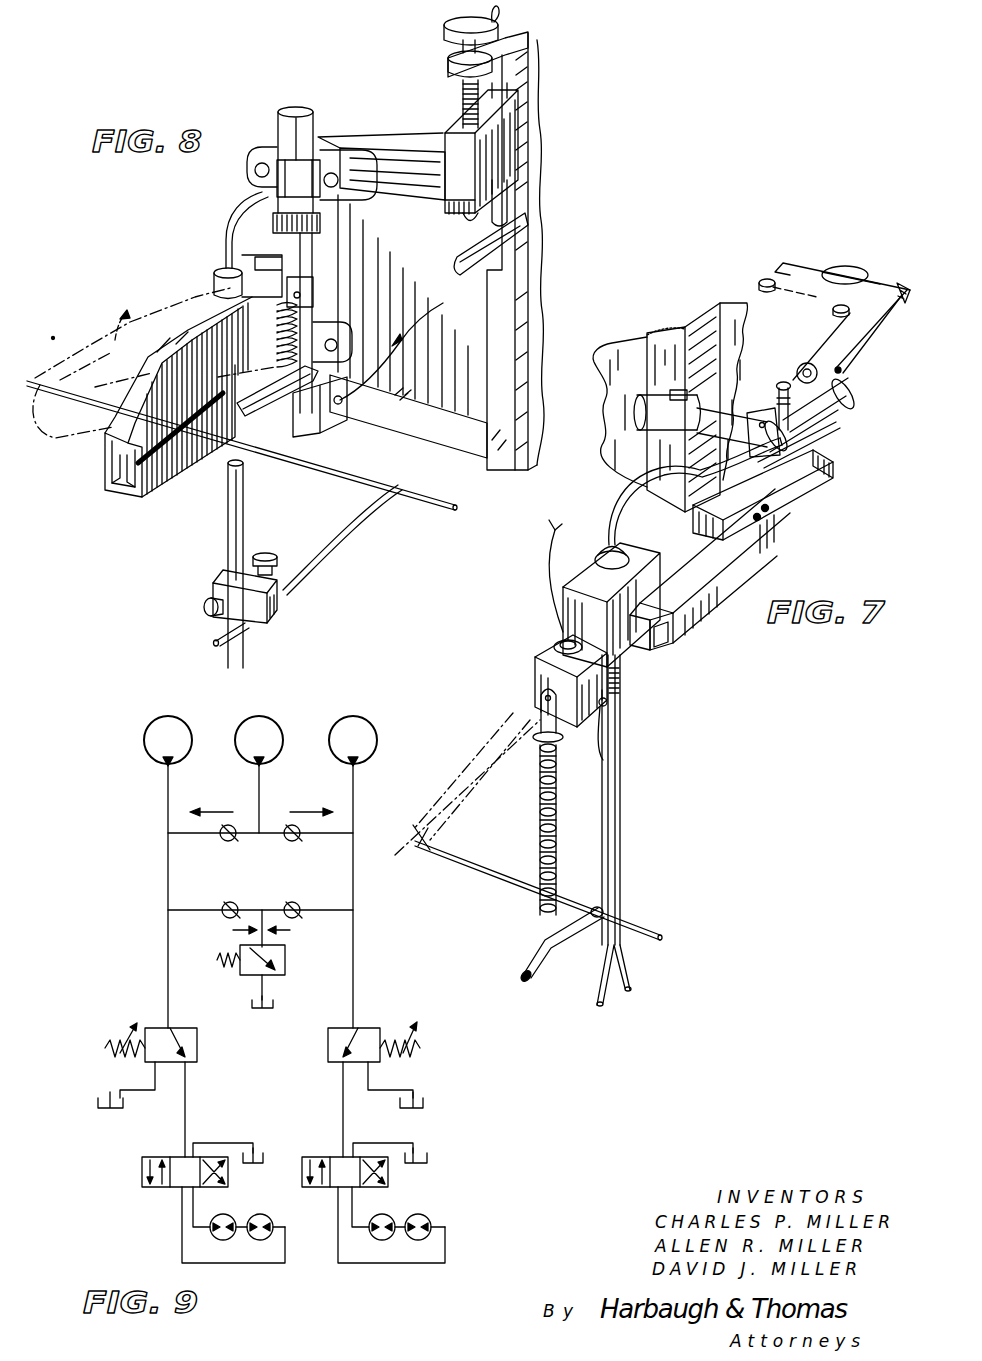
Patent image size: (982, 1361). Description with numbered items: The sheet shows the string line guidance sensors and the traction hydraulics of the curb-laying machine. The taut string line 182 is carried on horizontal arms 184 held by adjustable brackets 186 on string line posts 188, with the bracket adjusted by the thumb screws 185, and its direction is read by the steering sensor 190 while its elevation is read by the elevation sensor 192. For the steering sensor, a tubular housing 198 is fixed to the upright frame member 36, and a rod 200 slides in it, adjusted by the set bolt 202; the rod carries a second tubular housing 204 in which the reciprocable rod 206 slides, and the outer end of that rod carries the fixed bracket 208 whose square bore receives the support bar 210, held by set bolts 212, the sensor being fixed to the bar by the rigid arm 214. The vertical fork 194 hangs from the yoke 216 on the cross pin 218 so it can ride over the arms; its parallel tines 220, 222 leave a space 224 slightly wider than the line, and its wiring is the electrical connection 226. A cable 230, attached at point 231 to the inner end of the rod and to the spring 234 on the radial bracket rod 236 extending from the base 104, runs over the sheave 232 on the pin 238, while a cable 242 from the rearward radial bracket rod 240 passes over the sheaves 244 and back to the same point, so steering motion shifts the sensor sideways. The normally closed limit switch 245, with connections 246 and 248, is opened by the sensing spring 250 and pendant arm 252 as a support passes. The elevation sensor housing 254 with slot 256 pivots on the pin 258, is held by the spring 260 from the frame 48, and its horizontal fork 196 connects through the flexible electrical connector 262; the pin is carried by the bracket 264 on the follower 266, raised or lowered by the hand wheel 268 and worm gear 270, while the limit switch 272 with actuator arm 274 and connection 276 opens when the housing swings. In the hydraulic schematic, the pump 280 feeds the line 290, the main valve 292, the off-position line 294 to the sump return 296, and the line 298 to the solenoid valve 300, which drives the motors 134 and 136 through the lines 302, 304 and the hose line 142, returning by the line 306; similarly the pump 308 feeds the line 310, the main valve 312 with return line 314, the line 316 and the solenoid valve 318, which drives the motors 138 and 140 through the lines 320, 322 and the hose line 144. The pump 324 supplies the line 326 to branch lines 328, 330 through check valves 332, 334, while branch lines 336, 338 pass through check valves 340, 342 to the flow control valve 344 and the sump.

In FIG. 8, the hand wheel 268 is at (444, 31).
In FIG. 8, the worm gear 270 is at (462, 100).
In FIG. 8, the follower 266 is at (508, 143).
In FIG. 8, the bracket 264 is at (408, 147).
In FIG. 8, the pin 258 is at (300, 108).
In FIG. 8, the electrical connector 262 is at (226, 243).
In FIG. 8, the spring 260 is at (312, 280).
In FIG. 8, the electrical connection 276 is at (411, 348).
In FIG. 8, the frame 48 is at (383, 425).
In FIG. 8, the limit switch 272 is at (302, 427).
In FIG. 8, the actuator arm 274 is at (263, 420).
In FIG. 8, the elevation sensor 192 is at (170, 473).
In FIG. 8, the horizontal fork 196 is at (122, 498).
In FIG. 8, the housing 254 is at (107, 435).
In FIG. 8, the slot 256 is at (113, 463).
In FIG. 8, the string line 182 is at (447, 487).
In FIG. 7, the string line 182 is at (657, 933).
In FIG. 8, the horizontal arm 184 is at (350, 525).
In FIG. 7, the horizontal arm 184 is at (530, 963).
In FIG. 8, the adjustable bracket 186 is at (283, 597).
In FIG. 8, the thumb screw 185 is at (263, 547).
In FIG. 8, the string line post 188 is at (245, 650).
In FIG. 7, the set bolt 202 is at (653, 343).
In FIG. 7, the upright frame member 36 is at (657, 343).
In FIG. 7, the tubular housing 198 is at (653, 407).
In FIG. 7, the rod 200 is at (767, 410).
In FIG. 7, the pin 238 is at (787, 377).
In FIG. 7, the cable 230 is at (853, 360).
In FIG. 7, the sheave 232 is at (847, 372).
In FIG. 7, the attachment point 231 is at (841, 378).
In FIG. 7, the rearward radial bracket rod 240 is at (800, 262).
In FIG. 7, the base 104 is at (843, 266).
In FIG. 7, the spring 234 is at (890, 280).
In FIG. 7, the sheaves 244 is at (757, 282).
In FIG. 7, the cable 242 is at (810, 303).
In FIG. 7, the radial bracket rod 236 is at (860, 300).
In FIG. 7, the tubular housing 204 is at (827, 447).
In FIG. 7, the rod 206 is at (793, 477).
In FIG. 7, the support bar 210 is at (793, 503).
In FIG. 7, the set bolts 212 is at (760, 522).
In FIG. 7, the fixed bracket 208 is at (763, 547).
In FIG. 7, the steering sensor 190 is at (662, 577).
In FIG. 7, the electrical connection 246 is at (597, 547).
In FIG. 7, the electrical connection 226 is at (640, 472).
In FIG. 7, the electrical connection 248 is at (553, 532).
In FIG. 7, the limit switch 245 is at (543, 653).
In FIG. 7, the pendant arm 252 is at (540, 710).
In FIG. 7, the sensing spring 250 is at (547, 820).
In FIG. 7, the rigid arm 214 is at (642, 633).
In FIG. 7, the yoke 216 is at (613, 700).
In FIG. 7, the cross pin 218 is at (607, 707).
In FIG. 7, the tine 220 is at (622, 815).
In FIG. 7, the tine 222 is at (607, 833).
In FIG. 7, the vertical fork 194 is at (613, 873).
In FIG. 7, the space 224 is at (613, 957).
In FIG. 9, the pump 280 is at (172, 715).
In FIG. 9, the pump 324 is at (262, 715).
In FIG. 9, the pump 308 is at (358, 715).
In FIG. 9, the line 326 is at (263, 778).
In FIG. 9, the line 290 is at (167, 860).
In FIG. 9, the branch line 328 is at (200, 840).
In FIG. 9, the branch line 330 is at (330, 838).
In FIG. 9, the check valve 332 is at (237, 838).
In FIG. 9, the check valve 334 is at (293, 842).
In FIG. 9, the line 310 is at (357, 870).
In FIG. 9, the check valve 340 is at (224, 904).
In FIG. 9, the branch line 336 is at (224, 916).
In FIG. 9, the check valve 342 is at (300, 903).
In FIG. 9, the branch line 338 is at (300, 916).
In FIG. 9, the flow control valve 344 is at (285, 965).
In FIG. 9, the sump return 296 is at (273, 1003).
In FIG. 9, the main flow electrically-controlled valve 292 is at (183, 1027).
In FIG. 9, the line 294 is at (137, 1090).
In FIG. 9, the line 298 is at (188, 1082).
In FIG. 9, the four-position solenoid-operated valve 300 is at (183, 1157).
In FIG. 9, the line 306 is at (243, 1122).
In FIG. 9, the line 304 is at (195, 1203).
In FIG. 9, the hydraulic drive motor 134 is at (227, 1237).
In FIG. 9, the hydraulic hose line 142 is at (240, 1235).
In FIG. 9, the hydraulic drive motor 136 is at (270, 1217).
In FIG. 9, the line 302 is at (235, 1263).
In FIG. 9, the main valve 312 is at (357, 1027).
In FIG. 9, the return line 314 is at (393, 1090).
In FIG. 9, the line 316 is at (343, 1093).
In FIG. 9, the four-position solenoid valve 318 is at (342, 1157).
In FIG. 9, the line 322 is at (354, 1203).
In FIG. 9, the hydraulic drive motor 138 is at (400, 1217).
In FIG. 9, the hydraulic drive motor 140 is at (433, 1220).
In FIG. 9, the hydraulic hose line 144 is at (420, 1250).
In FIG. 9, the line 320 is at (387, 1263).